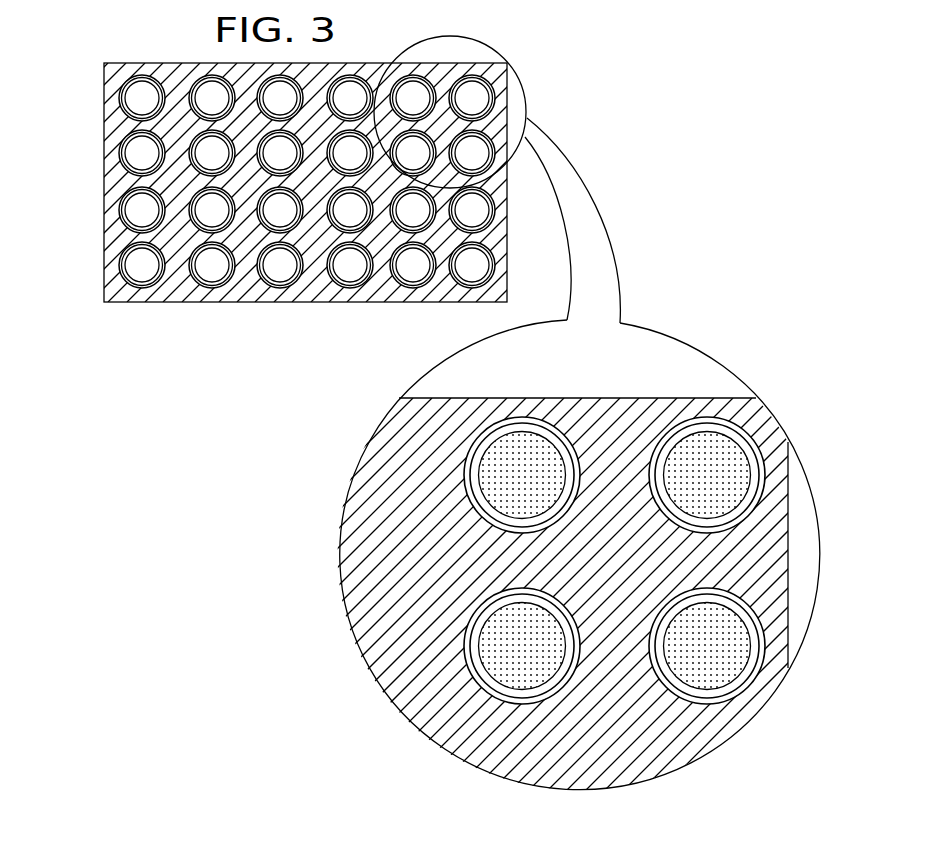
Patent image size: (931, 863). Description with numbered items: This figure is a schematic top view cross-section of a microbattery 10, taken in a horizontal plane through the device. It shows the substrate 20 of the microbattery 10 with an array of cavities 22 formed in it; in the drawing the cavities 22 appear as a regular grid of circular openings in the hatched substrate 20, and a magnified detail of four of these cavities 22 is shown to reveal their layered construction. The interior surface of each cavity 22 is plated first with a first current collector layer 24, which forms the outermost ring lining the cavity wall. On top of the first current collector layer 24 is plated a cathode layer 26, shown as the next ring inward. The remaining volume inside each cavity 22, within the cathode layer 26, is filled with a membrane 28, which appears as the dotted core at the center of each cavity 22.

The microbattery 10 is at (471, 44).
The substrate 20 is at (112, 283).
The cavities 22 is at (328, 415).
The first current collector layer 24 is at (765, 463).
The cathode layer 26 is at (753, 477).
The membrane 28 is at (723, 490).